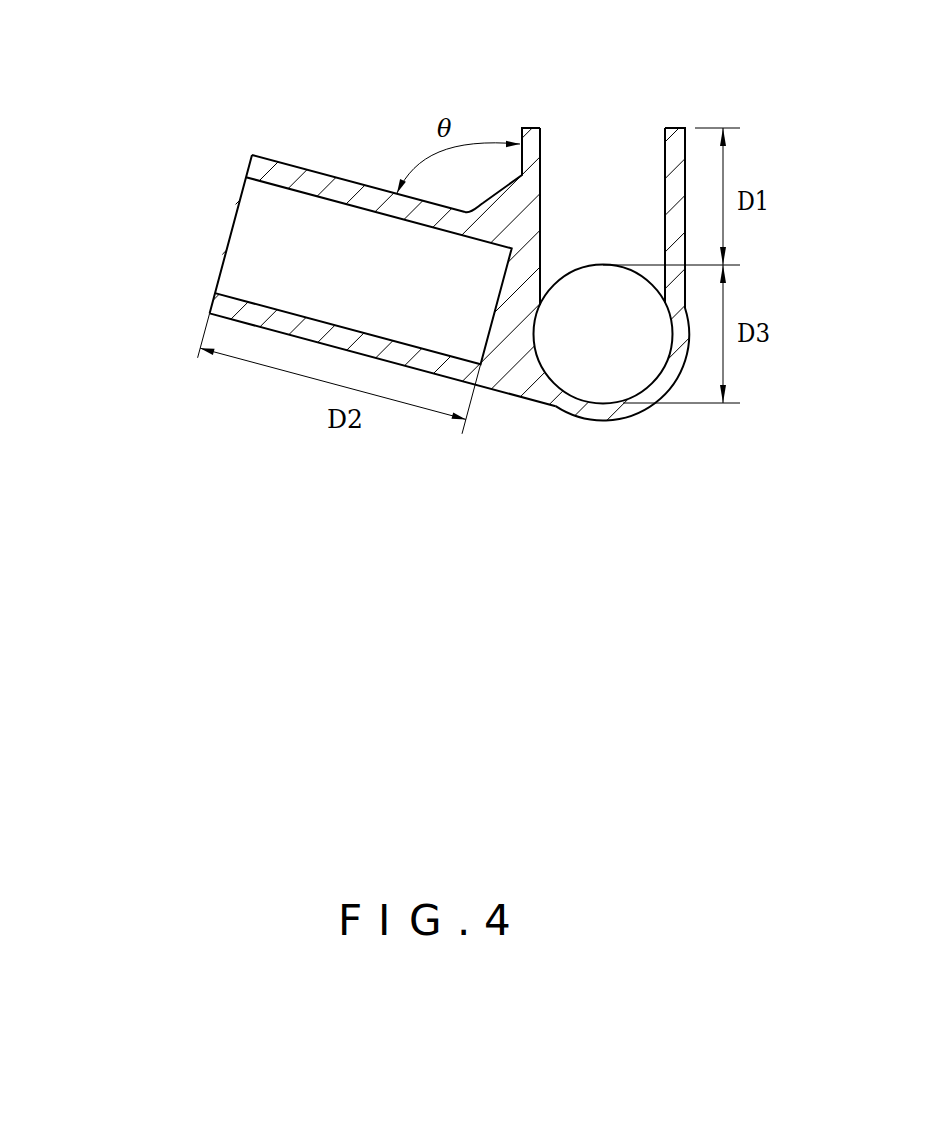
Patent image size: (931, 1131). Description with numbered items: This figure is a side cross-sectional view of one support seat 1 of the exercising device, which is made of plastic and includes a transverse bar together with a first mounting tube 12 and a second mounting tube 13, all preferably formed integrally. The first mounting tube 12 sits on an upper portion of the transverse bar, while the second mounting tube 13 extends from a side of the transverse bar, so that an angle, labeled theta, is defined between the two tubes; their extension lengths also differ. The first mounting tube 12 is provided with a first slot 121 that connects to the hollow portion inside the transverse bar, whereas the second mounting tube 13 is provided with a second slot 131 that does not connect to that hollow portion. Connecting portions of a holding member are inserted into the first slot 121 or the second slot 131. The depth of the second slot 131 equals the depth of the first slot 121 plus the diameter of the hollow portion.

The support seat 1 is at (267, 100).
The first mounting tube 12 is at (608, 142).
The first slot 121 is at (609, 212).
The second mounting tube 13 is at (228, 269).
The second slot 131 is at (298, 270).